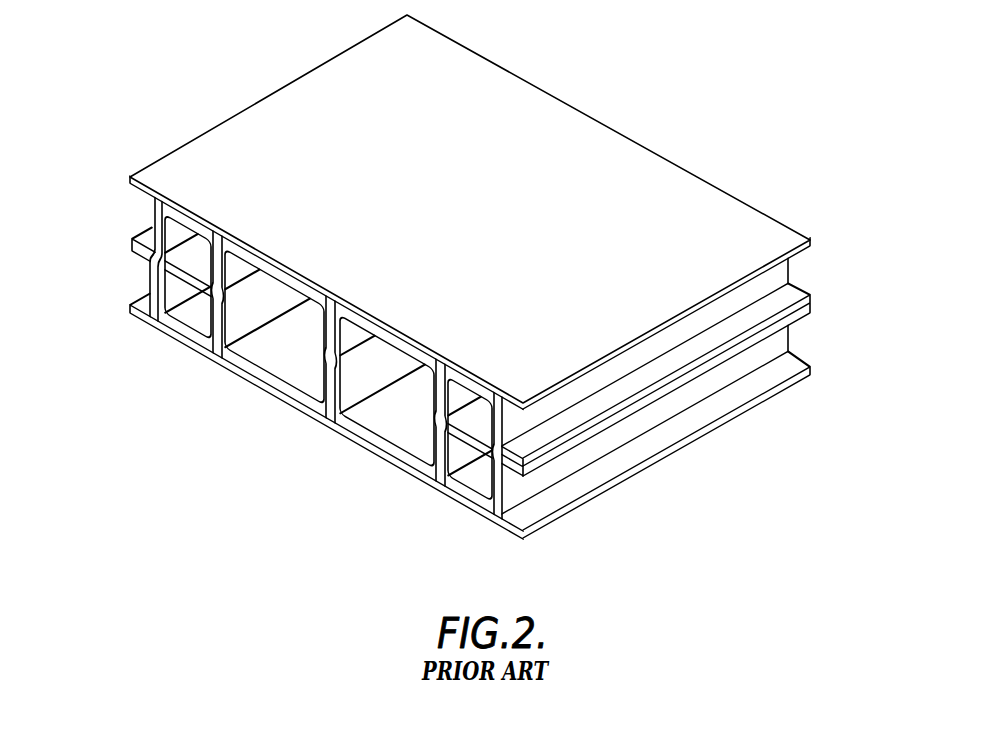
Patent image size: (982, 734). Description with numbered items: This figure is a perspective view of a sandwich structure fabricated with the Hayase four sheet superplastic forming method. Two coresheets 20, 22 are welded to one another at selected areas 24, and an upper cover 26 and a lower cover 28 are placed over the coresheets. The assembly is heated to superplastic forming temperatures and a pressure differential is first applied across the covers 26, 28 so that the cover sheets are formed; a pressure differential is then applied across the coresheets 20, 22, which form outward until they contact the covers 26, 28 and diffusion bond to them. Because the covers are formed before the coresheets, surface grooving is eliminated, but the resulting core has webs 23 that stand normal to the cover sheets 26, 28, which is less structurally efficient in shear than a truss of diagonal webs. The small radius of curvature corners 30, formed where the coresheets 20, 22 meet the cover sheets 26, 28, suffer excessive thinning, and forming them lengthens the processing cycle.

The coresheet 20 is at (142, 286).
The coresheet 22 is at (138, 210).
The web 23 is at (208, 320).
The selected area 24 is at (132, 250).
The upper cover 26 is at (800, 249).
The lower cover 28 is at (572, 508).
The corner 30 is at (432, 457).